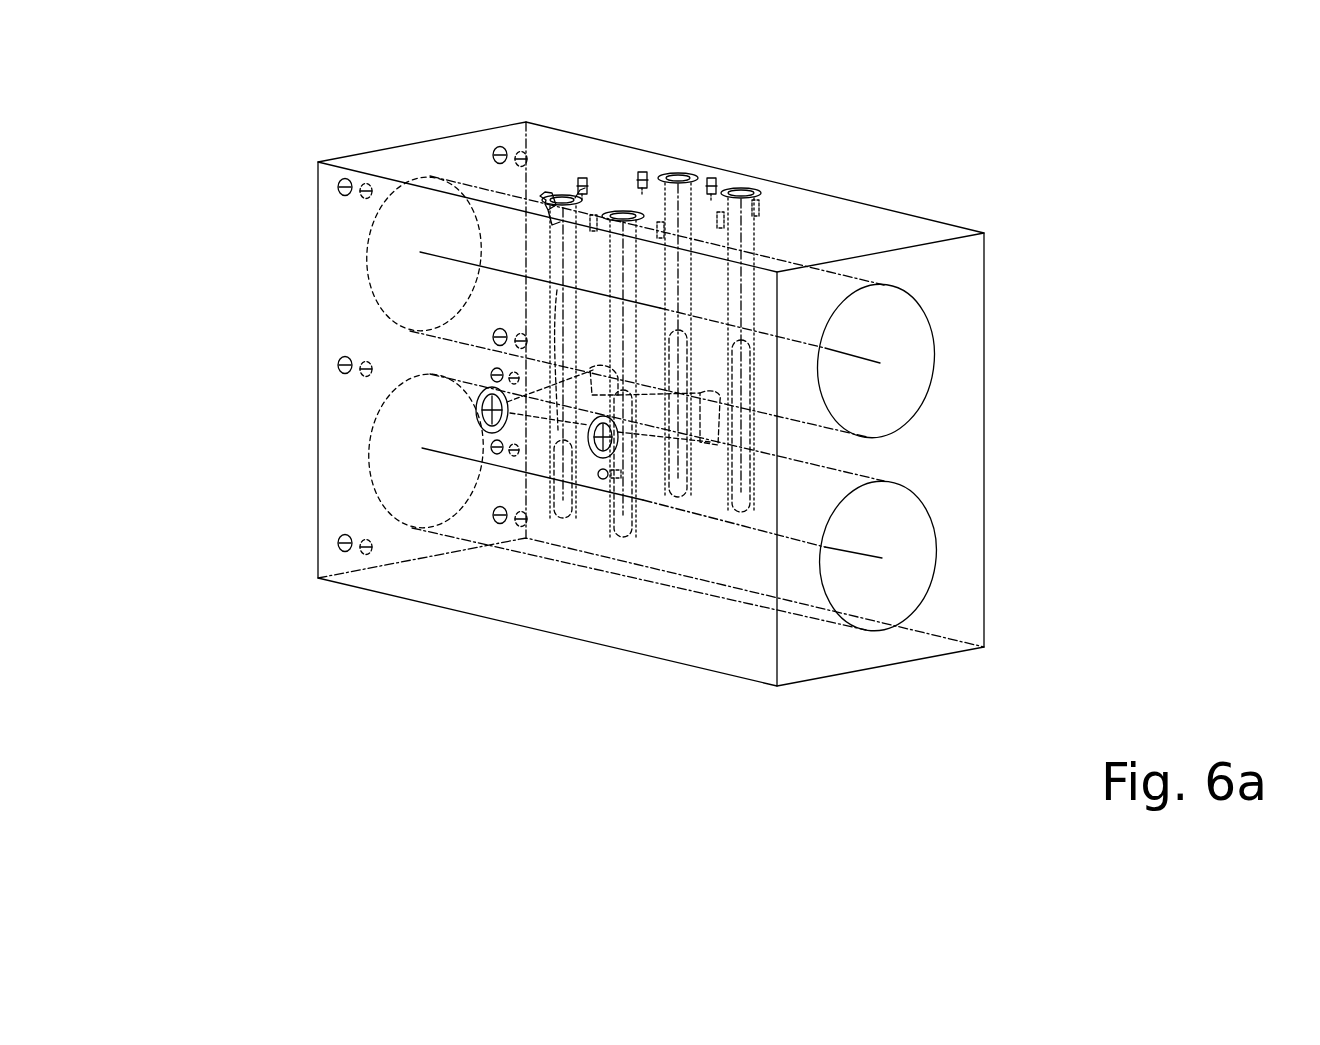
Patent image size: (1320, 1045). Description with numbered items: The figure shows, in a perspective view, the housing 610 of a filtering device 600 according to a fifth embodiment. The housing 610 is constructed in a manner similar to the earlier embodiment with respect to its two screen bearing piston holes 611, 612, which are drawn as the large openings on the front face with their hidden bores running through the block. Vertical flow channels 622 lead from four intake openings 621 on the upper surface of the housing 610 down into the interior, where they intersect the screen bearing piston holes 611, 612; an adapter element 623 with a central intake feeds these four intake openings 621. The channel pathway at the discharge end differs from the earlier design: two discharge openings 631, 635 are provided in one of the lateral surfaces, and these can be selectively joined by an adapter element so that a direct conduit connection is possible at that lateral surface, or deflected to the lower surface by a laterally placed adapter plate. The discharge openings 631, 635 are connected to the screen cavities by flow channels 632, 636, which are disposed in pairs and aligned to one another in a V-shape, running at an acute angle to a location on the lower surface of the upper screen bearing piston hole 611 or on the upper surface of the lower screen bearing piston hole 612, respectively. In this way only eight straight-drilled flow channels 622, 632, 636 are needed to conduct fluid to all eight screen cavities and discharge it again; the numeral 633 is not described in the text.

The filtering device 600 is at (1022, 130).
The housing 610 is at (338, 161).
The screen bearing piston hole 611 is at (370, 265).
The screen bearing piston hole 612 is at (370, 460).
The intake openings 621 is at (742, 190).
The vertical flow channels 622 is at (546, 200).
The adapter element 623 is at (562, 290).
The discharge opening 631 is at (490, 434).
The flow channels 632 is at (550, 453).
The second ring linkage 633 is at (663, 447).
The discharge opening 635 is at (603, 480).
The flow channels 636 is at (711, 424).